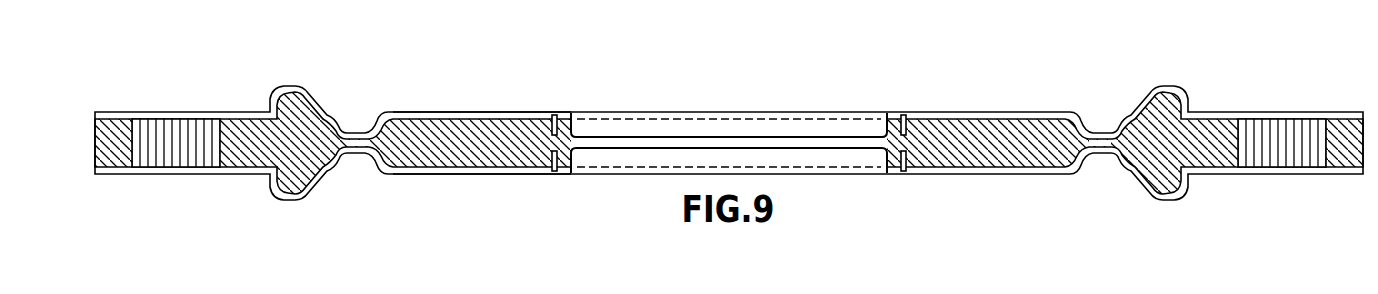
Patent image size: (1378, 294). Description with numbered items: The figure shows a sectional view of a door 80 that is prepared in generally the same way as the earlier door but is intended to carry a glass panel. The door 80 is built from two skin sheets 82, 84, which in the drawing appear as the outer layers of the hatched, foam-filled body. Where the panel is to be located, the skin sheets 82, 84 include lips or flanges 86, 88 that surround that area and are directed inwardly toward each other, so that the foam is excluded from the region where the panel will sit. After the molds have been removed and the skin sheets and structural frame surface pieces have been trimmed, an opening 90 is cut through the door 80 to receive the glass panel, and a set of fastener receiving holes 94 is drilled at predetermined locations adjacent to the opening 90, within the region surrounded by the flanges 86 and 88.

The door 80 is at (1031, 196).
The skin sheet 82 is at (442, 112).
The skin sheet 84 is at (412, 175).
The lip or flange 86 is at (605, 128).
The lip or flange 88 is at (840, 166).
The opening 90 is at (604, 147).
The fastener receiving holes 94 is at (555, 174).